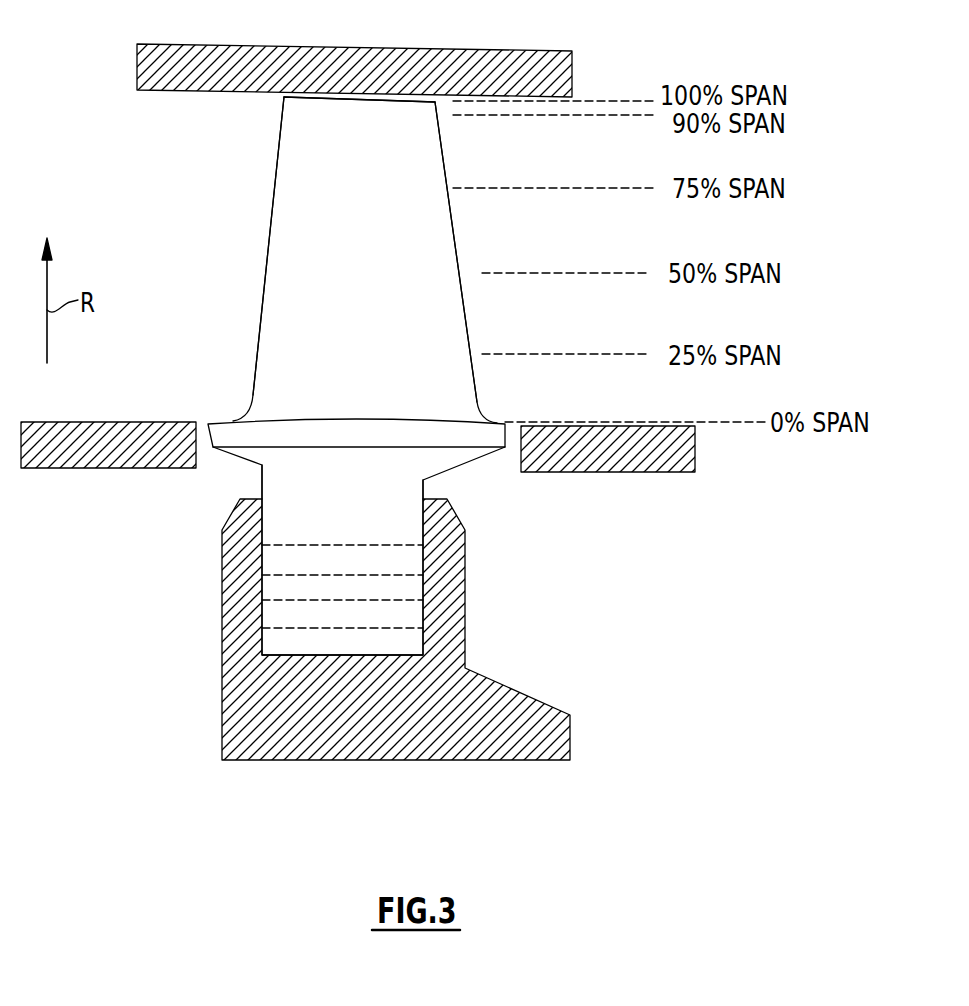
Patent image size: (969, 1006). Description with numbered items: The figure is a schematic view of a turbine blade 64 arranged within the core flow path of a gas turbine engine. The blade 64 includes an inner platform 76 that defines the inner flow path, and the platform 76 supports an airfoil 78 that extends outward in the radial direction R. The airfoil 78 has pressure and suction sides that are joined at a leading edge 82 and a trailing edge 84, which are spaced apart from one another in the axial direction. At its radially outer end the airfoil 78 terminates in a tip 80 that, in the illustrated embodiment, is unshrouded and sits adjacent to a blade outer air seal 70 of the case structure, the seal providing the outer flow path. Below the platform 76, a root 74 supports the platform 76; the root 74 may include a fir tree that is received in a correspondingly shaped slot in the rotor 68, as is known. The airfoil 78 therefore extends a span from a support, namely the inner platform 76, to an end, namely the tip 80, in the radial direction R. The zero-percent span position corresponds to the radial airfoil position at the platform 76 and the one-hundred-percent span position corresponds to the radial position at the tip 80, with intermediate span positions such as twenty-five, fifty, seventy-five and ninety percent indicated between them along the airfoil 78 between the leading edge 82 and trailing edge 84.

The blade 64 is at (342, 332).
The rotor 68 is at (477, 697).
The blade outer air seal 70 is at (270, 70).
The root 74 is at (408, 560).
The inner platform 76 is at (452, 424).
The airfoil 78 is at (300, 135).
The tip 80 is at (358, 100).
The leading edge 82 is at (267, 264).
The trailing edge 84 is at (467, 320).